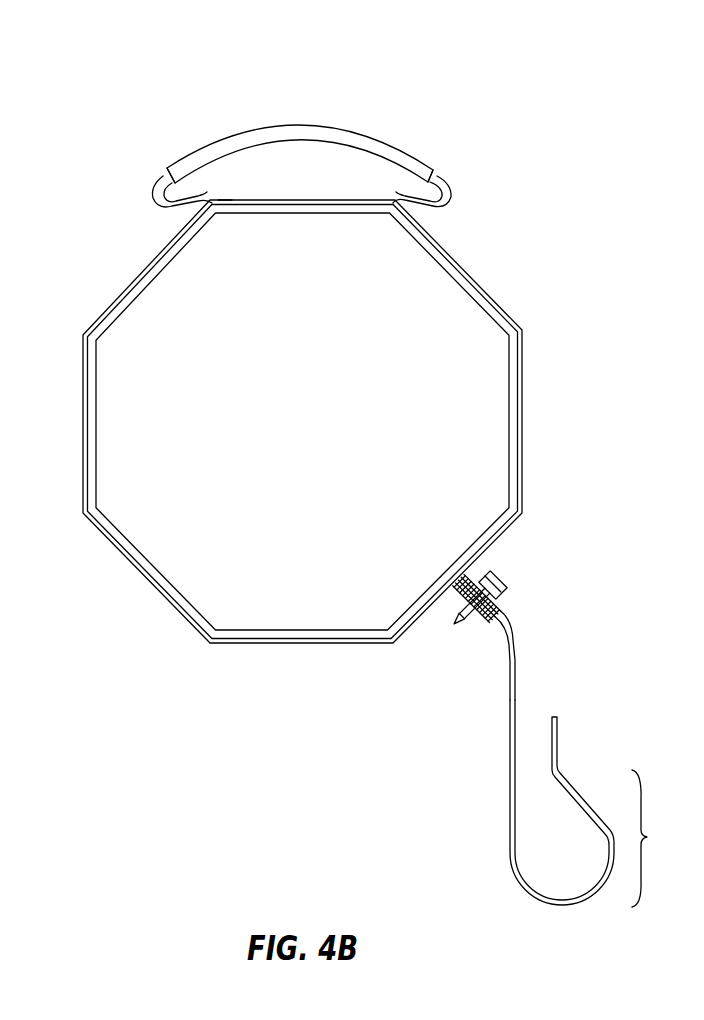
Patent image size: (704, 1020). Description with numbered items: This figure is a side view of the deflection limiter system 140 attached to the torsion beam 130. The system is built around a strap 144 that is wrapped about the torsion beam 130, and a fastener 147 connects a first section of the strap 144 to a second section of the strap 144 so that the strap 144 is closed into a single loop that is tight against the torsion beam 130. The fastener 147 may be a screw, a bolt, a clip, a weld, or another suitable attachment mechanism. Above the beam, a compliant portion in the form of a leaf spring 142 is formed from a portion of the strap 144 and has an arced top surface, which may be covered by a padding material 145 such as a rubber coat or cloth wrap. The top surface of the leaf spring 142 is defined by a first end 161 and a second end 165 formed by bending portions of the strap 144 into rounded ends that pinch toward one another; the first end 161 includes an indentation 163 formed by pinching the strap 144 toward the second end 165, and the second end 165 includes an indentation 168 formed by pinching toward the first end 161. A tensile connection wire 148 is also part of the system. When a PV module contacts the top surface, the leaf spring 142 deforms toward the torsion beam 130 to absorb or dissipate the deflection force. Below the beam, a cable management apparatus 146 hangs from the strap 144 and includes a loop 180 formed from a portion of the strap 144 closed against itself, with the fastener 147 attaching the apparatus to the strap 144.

The deflection limiter system 140 is at (142, 83).
The torsion beam 130 is at (151, 265).
The leaf spring 142 is at (380, 122).
The strap 144 is at (464, 262).
The padding material 145 is at (302, 124).
The cable management apparatus 146 is at (577, 787).
The fastener 147 is at (499, 581).
The tensile connection wire 148 is at (223, 200).
The first end 161 is at (145, 182).
The indentation 163 is at (162, 178).
The second end 165 is at (460, 182).
The indentation 168 is at (445, 181).
The loop 180 is at (657, 838).